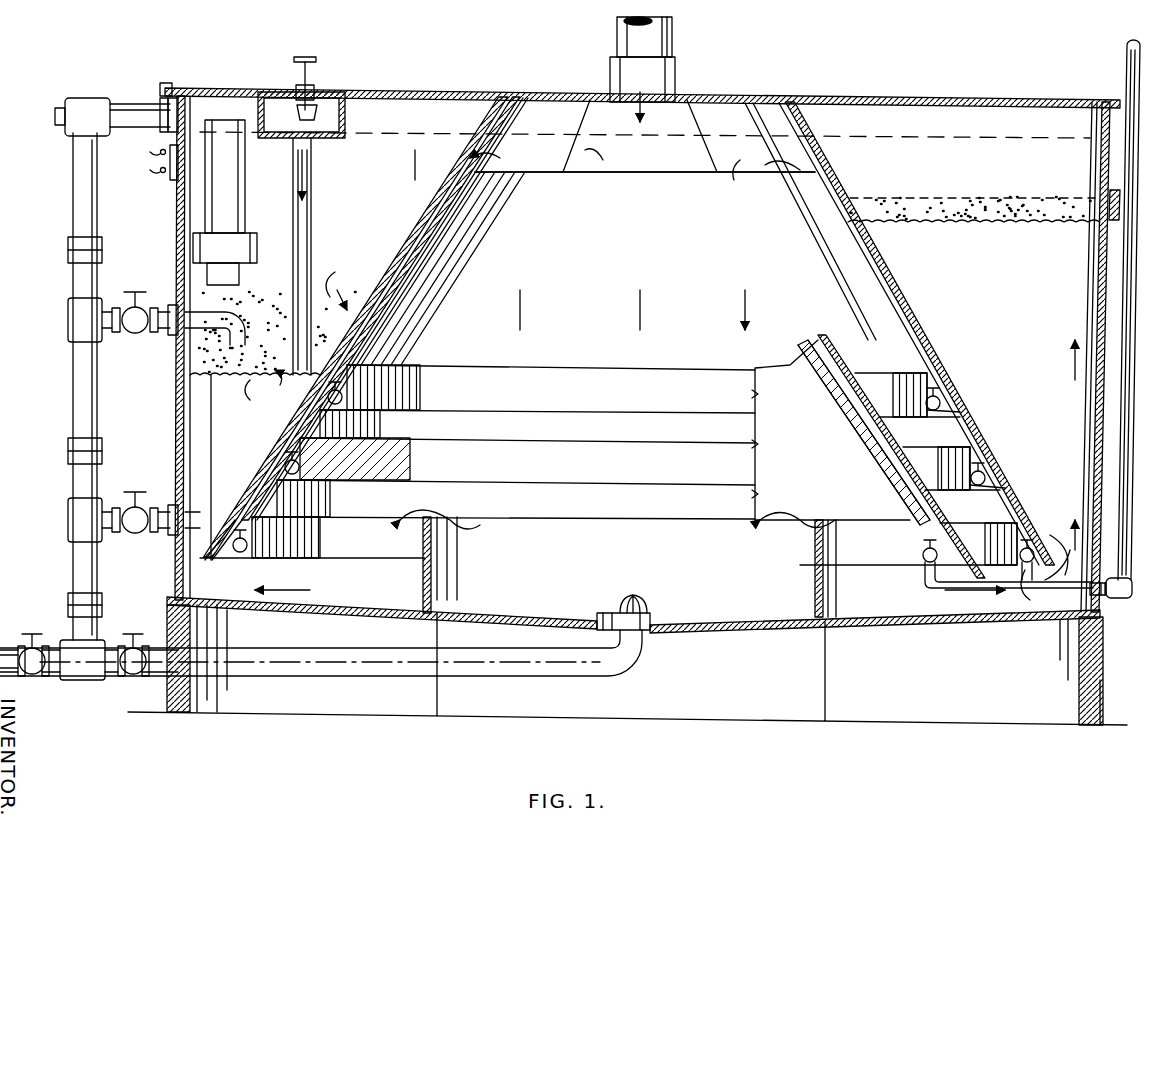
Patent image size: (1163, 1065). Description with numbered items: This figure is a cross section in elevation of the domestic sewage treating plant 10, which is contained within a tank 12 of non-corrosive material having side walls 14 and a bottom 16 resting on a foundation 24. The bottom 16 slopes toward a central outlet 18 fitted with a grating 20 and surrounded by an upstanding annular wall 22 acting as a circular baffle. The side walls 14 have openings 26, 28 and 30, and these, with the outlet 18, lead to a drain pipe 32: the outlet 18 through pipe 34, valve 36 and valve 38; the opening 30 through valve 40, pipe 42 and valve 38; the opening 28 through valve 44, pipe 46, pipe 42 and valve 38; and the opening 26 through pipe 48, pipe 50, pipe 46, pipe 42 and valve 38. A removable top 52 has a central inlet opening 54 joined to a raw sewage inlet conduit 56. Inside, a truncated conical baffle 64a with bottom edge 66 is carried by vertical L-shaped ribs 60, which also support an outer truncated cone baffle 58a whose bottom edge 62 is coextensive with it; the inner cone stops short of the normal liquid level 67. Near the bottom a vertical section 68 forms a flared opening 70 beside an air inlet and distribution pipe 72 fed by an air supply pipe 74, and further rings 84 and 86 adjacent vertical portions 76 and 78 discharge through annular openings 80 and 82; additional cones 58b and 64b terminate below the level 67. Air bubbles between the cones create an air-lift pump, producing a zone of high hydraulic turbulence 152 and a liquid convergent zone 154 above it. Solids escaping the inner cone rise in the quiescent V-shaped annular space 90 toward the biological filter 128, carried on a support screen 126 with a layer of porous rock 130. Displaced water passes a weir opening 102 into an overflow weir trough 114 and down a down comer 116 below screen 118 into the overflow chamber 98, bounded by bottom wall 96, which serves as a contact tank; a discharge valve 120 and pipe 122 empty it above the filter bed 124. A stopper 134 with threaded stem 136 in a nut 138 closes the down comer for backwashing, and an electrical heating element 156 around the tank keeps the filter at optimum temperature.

The domestic treating plant 10 is at (958, 176).
The tank 12 is at (176, 458).
The side walls 14 is at (174, 414).
The bottom 16 is at (772, 633).
The outlet 18 is at (643, 613).
The grating 20 is at (633, 597).
The upstanding annular wall 22 is at (815, 558).
The foundation 24 is at (1095, 728).
The opening 26 is at (176, 136).
The opening 28 is at (188, 339).
The opening 30 is at (174, 545).
The drain pipe 32 is at (12, 650).
The pipe 34 is at (376, 667).
The valve 36 is at (130, 675).
The valve 38 is at (38, 682).
The valve 40 is at (116, 507).
The pipe 42 is at (72, 570).
The valve 44 is at (120, 299).
The pipe 46 is at (74, 430).
The pipe 48 is at (140, 96).
The pipe 50 is at (78, 188).
The top 52 is at (906, 96).
The central inlet opening 54 is at (675, 95).
The raw sewage inlet conduit 56 is at (672, 61).
The outer truncated cone baffle 58a is at (900, 274).
The additional outer baffle cone 58b is at (833, 333).
The L-shaped ribs 60 is at (756, 131).
The bottom edge 62 is at (220, 552).
The truncated conical baffle 64a is at (830, 235).
The additional inner baffle cone 64b is at (804, 338).
The bottom edge 66 is at (365, 554).
The normal liquid level 67 is at (925, 200).
The vertical section 68 is at (1000, 543).
The flared opening 70 is at (1055, 537).
The air inlet and distribution pipe 72 is at (923, 568).
The air supply pipe 74 is at (1126, 80).
The vertical portion 76 is at (954, 468).
The vertical portion 78 is at (910, 392).
The annular opening 80 is at (984, 475).
The annular opening 82 is at (941, 404).
The air inlet and distribution pipe 84 is at (1010, 480).
The air inlet and distribution pipe 86 is at (935, 397).
The V-shaped annular space 90 is at (1046, 336).
The bottom wall 96 is at (233, 535).
The overflow chamber 98 is at (234, 467).
The weir opening 102 is at (315, 99).
The overflow weir trough 114 is at (345, 117).
The down comer 116 is at (310, 233).
The screen 118 is at (214, 377).
The discharge valve 120 is at (227, 186).
The pipe 122 is at (185, 350).
The filter bed 124 is at (339, 282).
The support screen 126 is at (1065, 245).
The biological filter 128 is at (965, 227).
The layer of porous rock particles 130 is at (1055, 195).
The stopper 134 is at (300, 108).
The threaded stem 136 is at (292, 63).
The nut 138 is at (315, 88).
The zone of high hydraulic turbulence 152 is at (700, 403).
The liquid convergent zone 154 is at (645, 189).
The electrical heating element 156 is at (170, 205).